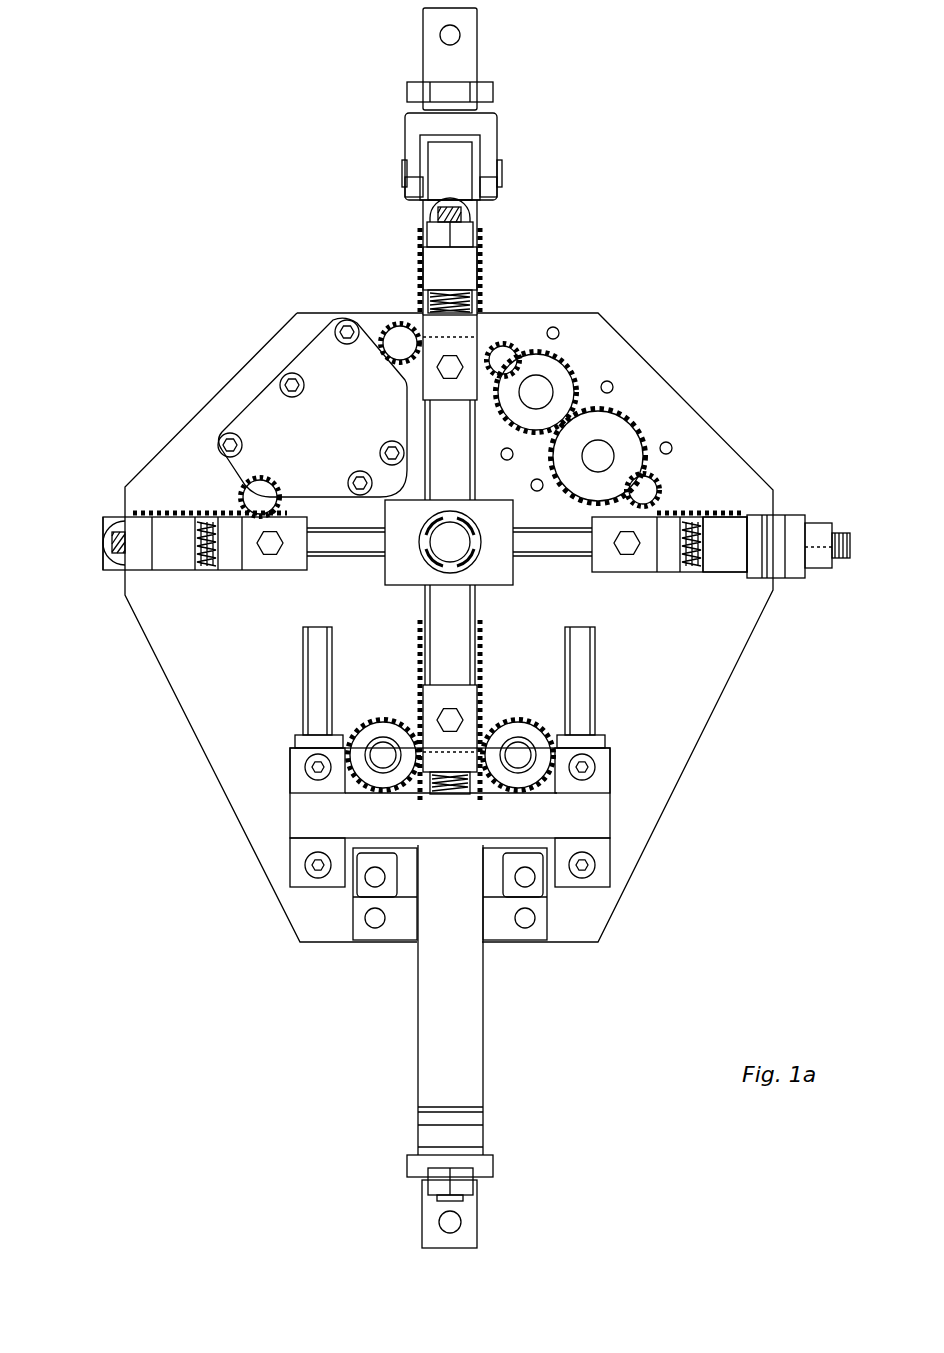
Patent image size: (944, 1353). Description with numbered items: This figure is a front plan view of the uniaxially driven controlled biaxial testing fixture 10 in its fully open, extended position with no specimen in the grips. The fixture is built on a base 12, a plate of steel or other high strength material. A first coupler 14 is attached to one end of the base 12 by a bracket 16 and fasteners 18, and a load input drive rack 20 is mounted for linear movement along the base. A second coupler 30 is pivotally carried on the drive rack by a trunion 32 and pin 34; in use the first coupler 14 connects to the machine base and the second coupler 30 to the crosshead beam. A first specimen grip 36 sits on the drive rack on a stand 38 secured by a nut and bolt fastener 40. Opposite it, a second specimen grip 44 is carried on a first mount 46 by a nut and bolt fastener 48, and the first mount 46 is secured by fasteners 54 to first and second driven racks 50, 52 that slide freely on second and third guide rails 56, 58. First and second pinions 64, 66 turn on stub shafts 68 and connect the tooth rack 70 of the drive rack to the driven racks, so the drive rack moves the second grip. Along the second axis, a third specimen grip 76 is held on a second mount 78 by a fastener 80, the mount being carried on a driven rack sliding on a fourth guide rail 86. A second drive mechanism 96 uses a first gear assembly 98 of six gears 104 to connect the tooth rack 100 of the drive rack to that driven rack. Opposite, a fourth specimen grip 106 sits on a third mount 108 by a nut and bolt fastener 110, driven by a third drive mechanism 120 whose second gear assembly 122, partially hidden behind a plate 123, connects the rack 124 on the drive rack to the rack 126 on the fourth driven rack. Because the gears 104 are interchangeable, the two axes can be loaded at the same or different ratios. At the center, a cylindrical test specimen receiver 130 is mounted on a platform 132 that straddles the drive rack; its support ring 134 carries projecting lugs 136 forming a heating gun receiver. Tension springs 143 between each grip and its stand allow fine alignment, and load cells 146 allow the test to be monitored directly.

The testing fixture 10 is at (232, 148).
The base 12 is at (690, 425).
The first coupler 14 is at (430, 1232).
The bracket 16 is at (505, 912).
The fasteners 18 is at (375, 920).
The load input drive rack 20 is at (463, 455).
The second coupler 30 is at (433, 60).
The trunion 32 is at (490, 127).
The pin 34 is at (500, 168).
The first specimen grip 36 is at (485, 316).
The stand 38 is at (437, 265).
The nut and bolt fastener 40 is at (483, 230).
The second specimen grip 44 is at (437, 697).
The first mount 46 is at (313, 813).
The nut and bolt fastener 48 is at (465, 1182).
The first driven rack 50 is at (297, 740).
The second driven rack 52 is at (590, 740).
The fasteners 54 is at (300, 767).
The second guide rail 56 is at (308, 667).
The third guide rail 58 is at (590, 700).
The first pinion 64 is at (365, 740).
The second pinion 66 is at (508, 752).
The stub shafts 68 is at (388, 752).
The tooth rack 70 is at (478, 643).
The third specimen grip 76 is at (665, 508).
The second mount 78 is at (735, 585).
The fastener 80 is at (822, 532).
The fourth guide rail 86 is at (570, 548).
The second drive mechanism 96 is at (770, 365).
The first gear assembly 98 is at (645, 381).
The tooth rack 100 is at (483, 262).
The gears 104 is at (400, 338).
The fourth specimen grip 106 is at (175, 557).
The third mount 108 is at (128, 588).
The nut and bolt fastener 110 is at (130, 525).
The third drive mechanism 120 is at (237, 338).
The second gear assembly 122 is at (205, 396).
The plate 123 is at (338, 433).
The rack 124 is at (420, 238).
The rack 126 is at (162, 518).
The test specimen receiver 130 is at (430, 546).
The platform 132 is at (518, 585).
The support ring 134 is at (480, 542).
The projecting lugs 136 is at (470, 520).
The tension springs 143 is at (483, 292).
The load cells 146 is at (780, 560).